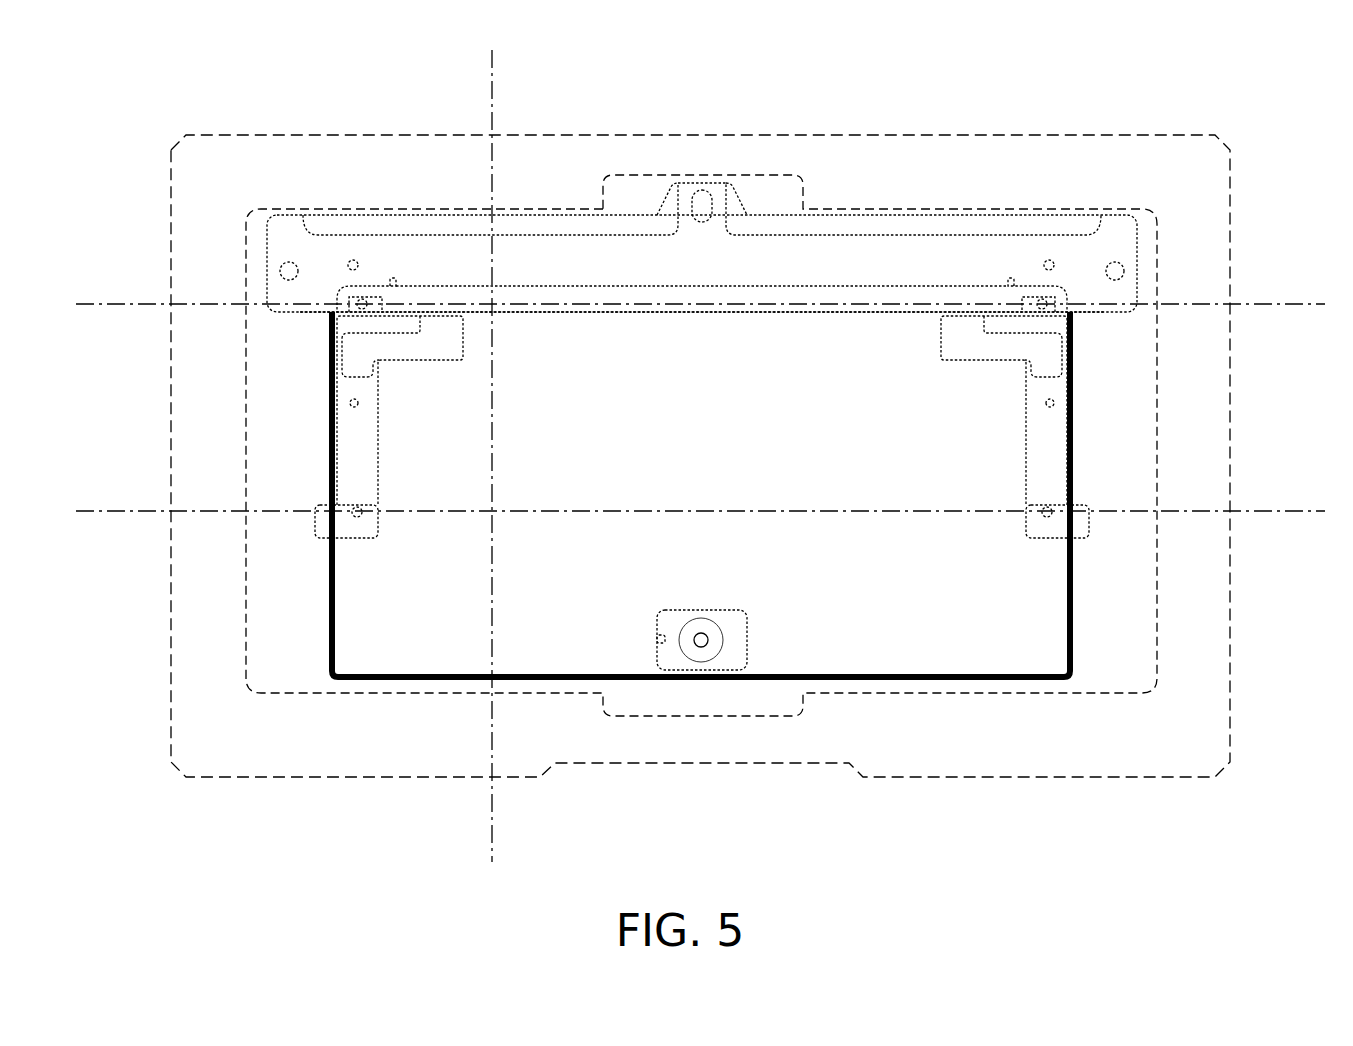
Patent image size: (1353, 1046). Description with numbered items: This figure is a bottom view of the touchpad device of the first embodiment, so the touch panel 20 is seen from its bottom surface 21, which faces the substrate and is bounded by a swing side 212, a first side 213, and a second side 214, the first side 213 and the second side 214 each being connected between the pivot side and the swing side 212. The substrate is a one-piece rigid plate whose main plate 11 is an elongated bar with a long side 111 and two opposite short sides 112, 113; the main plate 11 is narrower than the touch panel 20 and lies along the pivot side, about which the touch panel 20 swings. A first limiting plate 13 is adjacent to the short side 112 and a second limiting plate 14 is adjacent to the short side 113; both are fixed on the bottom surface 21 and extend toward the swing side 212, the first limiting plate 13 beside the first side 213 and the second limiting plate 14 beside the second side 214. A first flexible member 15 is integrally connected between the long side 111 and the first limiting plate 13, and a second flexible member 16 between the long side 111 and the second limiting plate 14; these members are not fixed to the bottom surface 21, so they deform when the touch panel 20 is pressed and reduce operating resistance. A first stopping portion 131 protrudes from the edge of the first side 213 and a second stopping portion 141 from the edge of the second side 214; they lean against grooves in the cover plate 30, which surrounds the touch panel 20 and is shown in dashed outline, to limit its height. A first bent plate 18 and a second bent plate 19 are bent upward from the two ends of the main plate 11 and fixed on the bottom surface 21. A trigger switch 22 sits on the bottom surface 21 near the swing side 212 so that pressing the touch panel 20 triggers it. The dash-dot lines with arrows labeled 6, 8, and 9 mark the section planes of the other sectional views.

The section line 6- 6 is at (1303, 560).
The section line 8- 8 is at (540, 837).
The section line 9- 9 is at (1303, 352).
The main plate 11 is at (858, 247).
The long side 111 is at (772, 312).
The short side 112 is at (268, 262).
The short side 113 is at (1140, 265).
The first limiting plate 13 is at (355, 440).
The first stopping portion 131 is at (318, 522).
The second limiting plate 14 is at (1045, 440).
The second stopping portion 141 is at (1080, 522).
The first flexible member 15 is at (421, 369).
The second flexible member 16 is at (983, 369).
The first bent plate 18 is at (373, 297).
The second bent plate 19 is at (1028, 297).
The touch panel 20 is at (950, 693).
The bottom surface 21 is at (860, 652).
The swing side 212 is at (765, 655).
The first side 213 is at (342, 596).
The second side 214 is at (1060, 590).
The trigger switch 22 is at (701, 648).
The cover plate 30 is at (1077, 777).